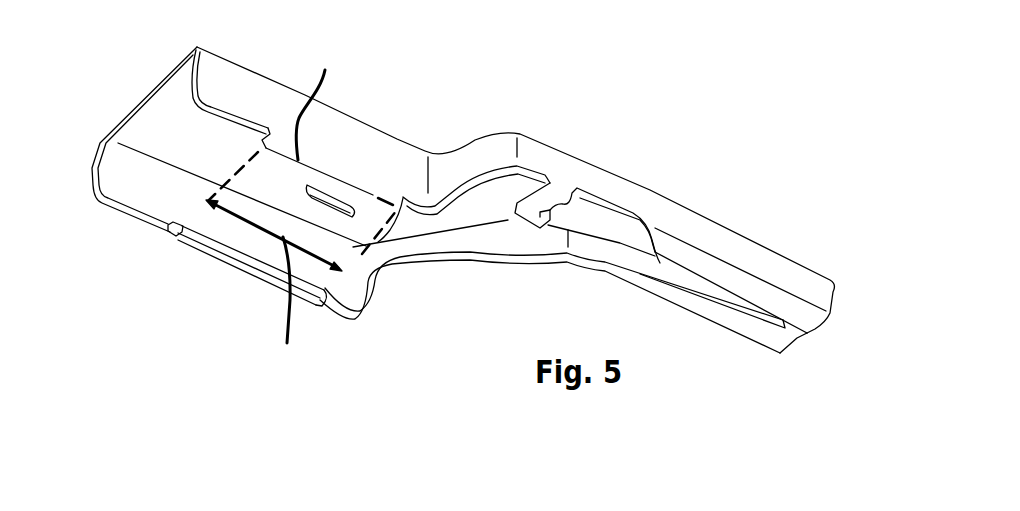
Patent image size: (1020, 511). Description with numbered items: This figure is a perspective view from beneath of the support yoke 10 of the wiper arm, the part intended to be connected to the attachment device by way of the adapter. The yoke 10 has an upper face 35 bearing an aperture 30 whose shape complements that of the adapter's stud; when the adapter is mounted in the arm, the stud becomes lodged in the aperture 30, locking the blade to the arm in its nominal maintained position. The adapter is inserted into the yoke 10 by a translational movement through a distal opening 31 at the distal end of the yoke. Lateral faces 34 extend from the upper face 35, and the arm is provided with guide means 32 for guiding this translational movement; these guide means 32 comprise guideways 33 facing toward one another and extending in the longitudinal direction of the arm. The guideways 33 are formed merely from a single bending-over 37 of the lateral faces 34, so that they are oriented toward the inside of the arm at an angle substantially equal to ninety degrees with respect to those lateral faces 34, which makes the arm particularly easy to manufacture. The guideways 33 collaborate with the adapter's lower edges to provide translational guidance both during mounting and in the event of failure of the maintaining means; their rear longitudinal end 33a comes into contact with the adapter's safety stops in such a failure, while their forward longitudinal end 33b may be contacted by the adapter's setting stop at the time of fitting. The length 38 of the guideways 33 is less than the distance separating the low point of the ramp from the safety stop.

The support yoke 10 is at (457, 190).
The aperture 30 is at (327, 201).
The distal opening 31 is at (238, 199).
The guide means 32 is at (233, 296).
The guideways 33 is at (260, 262).
The rear longitudinal end 33a is at (332, 309).
The forward longitudinal end 33b is at (160, 239).
The lateral faces 34 is at (343, 140).
The upper face 35 is at (210, 139).
The bending-over 37 is at (302, 148).
The length 38 is at (274, 289).